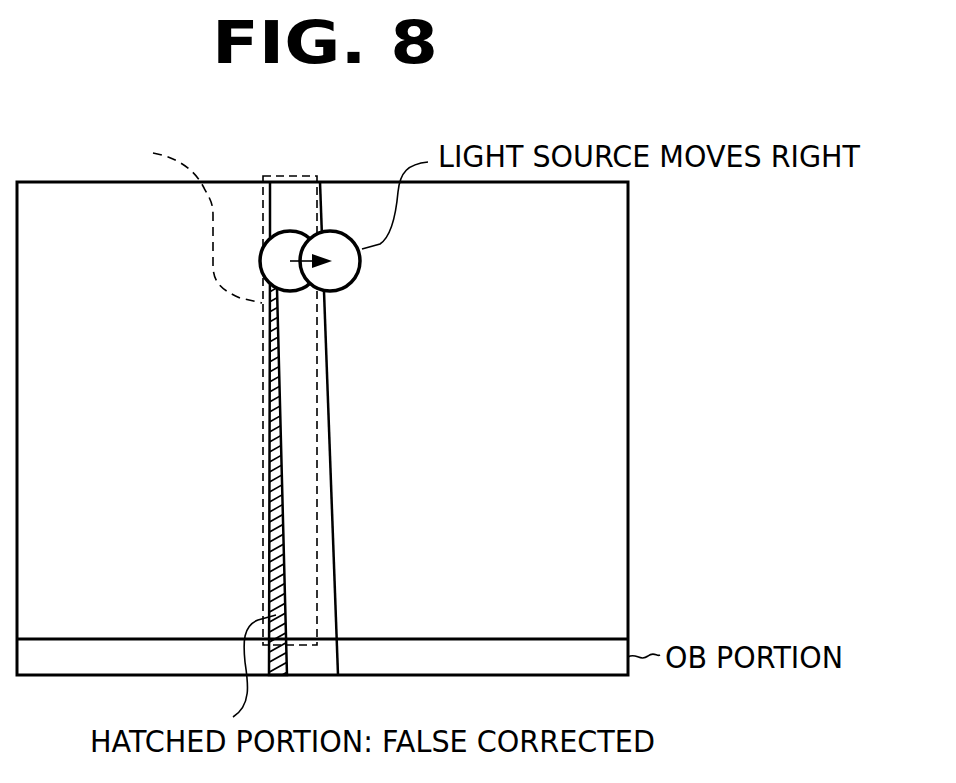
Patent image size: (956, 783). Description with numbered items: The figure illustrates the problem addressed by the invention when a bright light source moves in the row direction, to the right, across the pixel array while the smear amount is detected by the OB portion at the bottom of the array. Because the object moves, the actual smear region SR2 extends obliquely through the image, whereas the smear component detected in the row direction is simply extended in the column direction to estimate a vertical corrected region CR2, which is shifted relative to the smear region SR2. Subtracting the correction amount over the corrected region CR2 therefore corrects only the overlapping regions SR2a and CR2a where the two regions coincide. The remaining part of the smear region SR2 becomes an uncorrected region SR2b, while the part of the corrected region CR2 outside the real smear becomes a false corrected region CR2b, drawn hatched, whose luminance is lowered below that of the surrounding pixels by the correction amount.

The smear region SR2 is at (288, 203).
The corrected region CR2 is at (177, 219).
The overlapping region SR2a is at (302, 453).
The overlapping region CR2a is at (413, 468).
The uncorrected region SR2b is at (323, 535).
The false corrected region CR2b is at (269, 592).